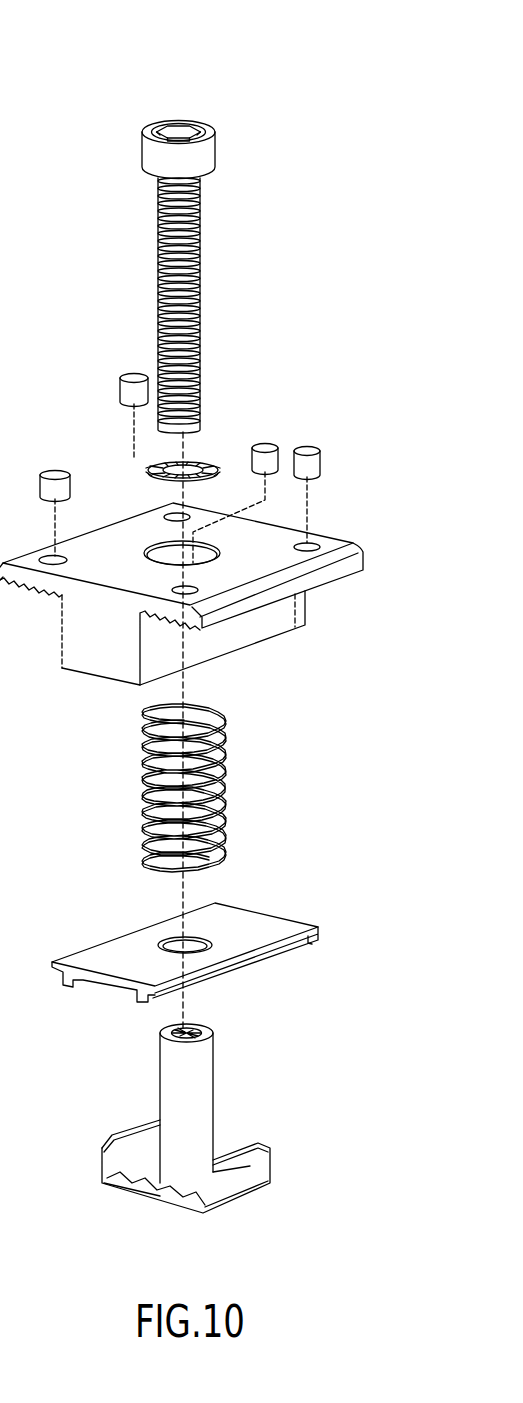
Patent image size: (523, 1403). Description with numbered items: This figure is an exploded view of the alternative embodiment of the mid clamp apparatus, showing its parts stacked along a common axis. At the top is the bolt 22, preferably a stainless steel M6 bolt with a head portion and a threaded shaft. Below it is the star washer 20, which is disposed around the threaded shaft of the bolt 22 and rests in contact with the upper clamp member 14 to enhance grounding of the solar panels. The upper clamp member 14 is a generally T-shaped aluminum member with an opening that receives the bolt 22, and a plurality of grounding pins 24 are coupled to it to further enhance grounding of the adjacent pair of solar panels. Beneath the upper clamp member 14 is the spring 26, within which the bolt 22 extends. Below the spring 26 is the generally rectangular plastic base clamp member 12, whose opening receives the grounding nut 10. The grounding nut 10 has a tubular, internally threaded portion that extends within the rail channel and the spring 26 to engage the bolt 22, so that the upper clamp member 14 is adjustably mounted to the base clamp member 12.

The grounding nut 10 is at (114, 1204).
The base clamp member 12 is at (251, 908).
The upper clamp member 14 is at (146, 511).
The star washer 20 is at (199, 456).
The bolt 22 is at (205, 217).
The grounding pins 24 is at (55, 474).
The spring 26 is at (222, 708).